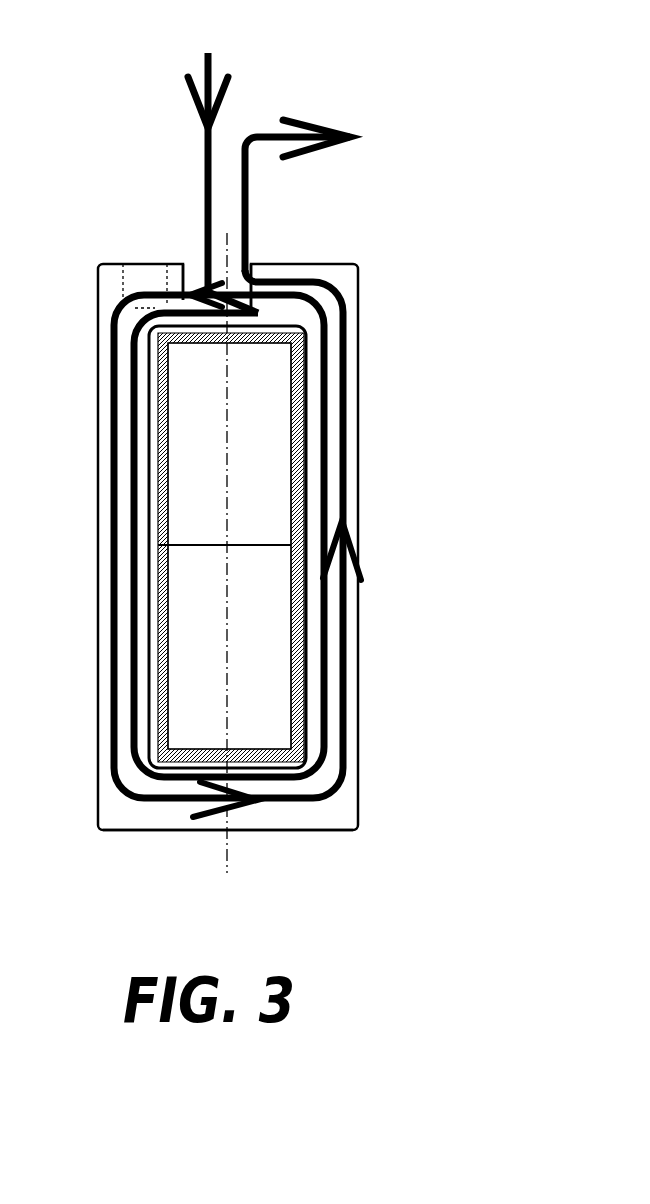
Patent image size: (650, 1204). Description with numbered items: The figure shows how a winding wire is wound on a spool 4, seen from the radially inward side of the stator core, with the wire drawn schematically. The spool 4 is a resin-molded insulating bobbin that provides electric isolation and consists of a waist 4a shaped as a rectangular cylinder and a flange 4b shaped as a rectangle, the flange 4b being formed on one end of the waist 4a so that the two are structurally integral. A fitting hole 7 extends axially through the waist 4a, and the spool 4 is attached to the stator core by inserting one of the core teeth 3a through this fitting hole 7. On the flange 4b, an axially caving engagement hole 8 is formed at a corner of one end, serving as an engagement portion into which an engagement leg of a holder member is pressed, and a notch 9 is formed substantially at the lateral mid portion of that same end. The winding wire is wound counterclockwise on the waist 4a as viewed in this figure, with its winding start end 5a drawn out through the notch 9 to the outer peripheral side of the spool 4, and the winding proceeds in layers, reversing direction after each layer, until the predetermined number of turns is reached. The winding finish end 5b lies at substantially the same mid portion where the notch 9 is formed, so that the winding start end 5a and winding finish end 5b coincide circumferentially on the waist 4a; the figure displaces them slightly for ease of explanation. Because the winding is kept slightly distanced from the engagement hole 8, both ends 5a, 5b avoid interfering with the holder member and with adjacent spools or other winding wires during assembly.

The teeth 3a is at (262, 665).
The spool 4 is at (97, 826).
The waist 4a is at (154, 605).
The flange 4b is at (325, 832).
The winding start end 5a is at (204, 60).
The winding finish end 5b is at (262, 142).
The fitting hole 7 is at (290, 586).
The engagement hole 8 is at (135, 268).
The notch 9 is at (190, 268).